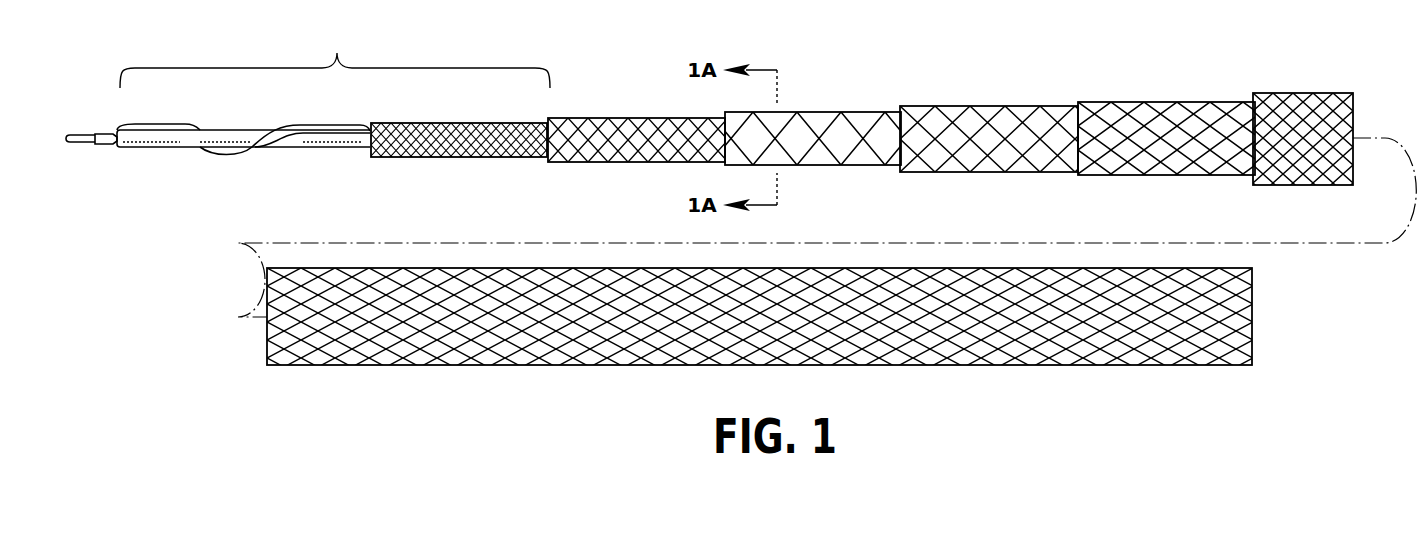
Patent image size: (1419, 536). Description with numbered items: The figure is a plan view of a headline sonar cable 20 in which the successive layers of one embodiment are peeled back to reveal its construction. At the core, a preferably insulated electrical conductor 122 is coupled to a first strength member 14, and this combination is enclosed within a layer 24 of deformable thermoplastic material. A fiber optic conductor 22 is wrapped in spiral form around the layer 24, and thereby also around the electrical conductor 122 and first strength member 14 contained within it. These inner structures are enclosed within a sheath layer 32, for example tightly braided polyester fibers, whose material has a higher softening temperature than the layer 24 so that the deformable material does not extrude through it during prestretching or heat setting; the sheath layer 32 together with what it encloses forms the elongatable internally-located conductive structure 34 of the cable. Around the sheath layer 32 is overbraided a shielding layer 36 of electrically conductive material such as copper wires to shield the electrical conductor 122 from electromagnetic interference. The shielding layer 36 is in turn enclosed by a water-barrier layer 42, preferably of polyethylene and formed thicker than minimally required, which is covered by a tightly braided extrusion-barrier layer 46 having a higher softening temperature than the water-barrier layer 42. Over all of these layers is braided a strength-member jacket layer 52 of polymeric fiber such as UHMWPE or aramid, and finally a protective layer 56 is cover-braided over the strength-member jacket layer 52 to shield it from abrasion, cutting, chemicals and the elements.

The first strength member 14 is at (84, 142).
The electrical conductor 122 is at (107, 146).
The layer of deformable material 24 is at (220, 130).
The fiber optic conductor 22 is at (232, 150).
The elongatable internally-located conductive structure 34 is at (337, 53).
The sheath layer 32 is at (428, 123).
The shielding layer 36 is at (582, 163).
The water-barrier layer 42 is at (812, 112).
The extrusion-barrier layer 46 is at (982, 172).
The strength-member jacket layer 52 is at (1155, 102).
The protective layer 56 is at (810, 271).
The headline sonar cable 20 is at (1228, 398).